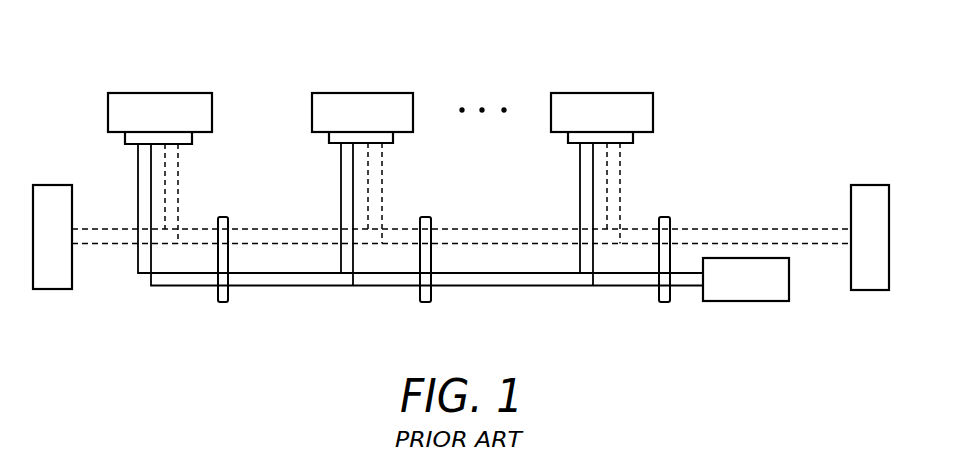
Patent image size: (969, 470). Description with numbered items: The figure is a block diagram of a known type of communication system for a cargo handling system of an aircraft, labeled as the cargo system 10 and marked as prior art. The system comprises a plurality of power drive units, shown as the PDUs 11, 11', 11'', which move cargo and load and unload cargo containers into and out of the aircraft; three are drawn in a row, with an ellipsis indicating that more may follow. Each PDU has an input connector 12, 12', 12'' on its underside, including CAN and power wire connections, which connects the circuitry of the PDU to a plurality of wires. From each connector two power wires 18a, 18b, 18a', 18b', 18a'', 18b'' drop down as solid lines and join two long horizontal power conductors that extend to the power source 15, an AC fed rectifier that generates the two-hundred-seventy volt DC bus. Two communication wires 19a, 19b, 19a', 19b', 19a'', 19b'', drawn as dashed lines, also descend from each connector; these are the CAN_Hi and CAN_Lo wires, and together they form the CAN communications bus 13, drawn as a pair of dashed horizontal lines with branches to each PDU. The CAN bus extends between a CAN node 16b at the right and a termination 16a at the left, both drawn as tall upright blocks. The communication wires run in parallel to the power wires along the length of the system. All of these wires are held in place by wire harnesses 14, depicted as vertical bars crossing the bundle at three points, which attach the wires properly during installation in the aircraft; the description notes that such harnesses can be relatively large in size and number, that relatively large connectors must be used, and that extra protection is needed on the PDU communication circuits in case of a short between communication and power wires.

The cargo system 10 is at (92, 61).
The power drive unit 11 is at (160, 84).
The power drive unit 11' is at (362, 84).
The power drive unit 11'' is at (602, 84).
The input connector 12 is at (127, 143).
The input connector 12' is at (394, 143).
The input connector 12'' is at (634, 143).
The CAN communications bus 13 is at (790, 228).
The wire harness 14 is at (223, 303).
The power source 15 is at (766, 302).
The termination 16a is at (52, 290).
The CAN node 16b is at (870, 291).
The power wire 18a is at (383, 208).
The power wire 18b is at (391, 215).
The power wire 18a' is at (301, 208).
The power wire 18b' is at (312, 214).
The power wire 18a'' is at (538, 208).
The power wire 18b'' is at (551, 214).
The communication wire 19a is at (202, 186).
The communication wire 19b is at (215, 194).
The communication wire 19a' is at (408, 186).
The communication wire 19b' is at (421, 193).
The communication wire 19a'' is at (648, 186).
The communication wire 19b'' is at (660, 193).